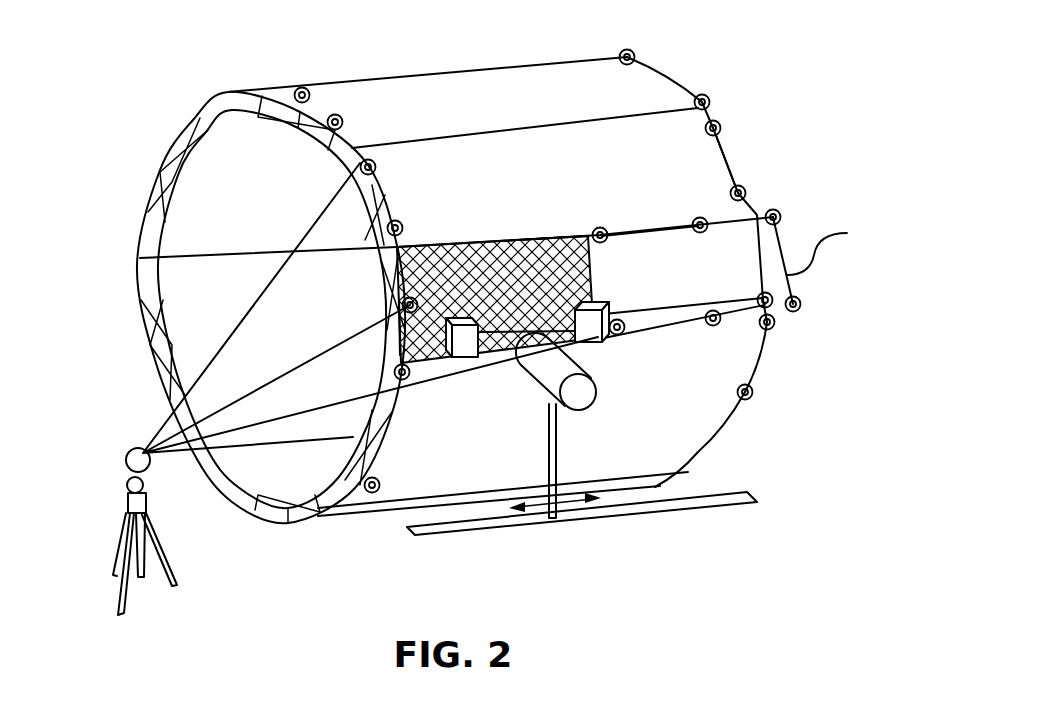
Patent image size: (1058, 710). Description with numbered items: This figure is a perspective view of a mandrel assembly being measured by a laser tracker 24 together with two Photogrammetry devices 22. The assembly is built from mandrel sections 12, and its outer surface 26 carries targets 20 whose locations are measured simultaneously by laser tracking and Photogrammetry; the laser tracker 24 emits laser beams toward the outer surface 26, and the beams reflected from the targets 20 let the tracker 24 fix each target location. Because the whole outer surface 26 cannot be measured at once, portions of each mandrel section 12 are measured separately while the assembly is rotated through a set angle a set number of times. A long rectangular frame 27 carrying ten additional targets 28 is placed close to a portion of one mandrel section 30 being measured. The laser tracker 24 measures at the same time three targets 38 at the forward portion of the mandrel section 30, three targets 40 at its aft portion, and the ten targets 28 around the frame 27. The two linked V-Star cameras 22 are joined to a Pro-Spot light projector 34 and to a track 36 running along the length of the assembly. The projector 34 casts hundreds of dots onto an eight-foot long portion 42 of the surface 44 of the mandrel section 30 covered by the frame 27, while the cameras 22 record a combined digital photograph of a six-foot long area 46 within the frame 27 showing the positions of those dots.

The mandrel section 12 is at (193, 125).
The target 20 is at (393, 368).
The Photogrammetry device 22 is at (467, 365).
The laser tracker 24 is at (128, 506).
The outer surface 26 is at (723, 160).
The rectangular frame 27 is at (834, 273).
The additional target 28 is at (600, 228).
The mandrel section being measured 30 is at (633, 284).
The light projector 34 is at (568, 402).
The track 36 is at (735, 505).
The forward target 38 is at (355, 164).
The aft target 40 is at (720, 127).
The eight-foot long portion 42 is at (503, 273).
The surface 44 is at (467, 280).
The six-foot long area 46 is at (541, 258).